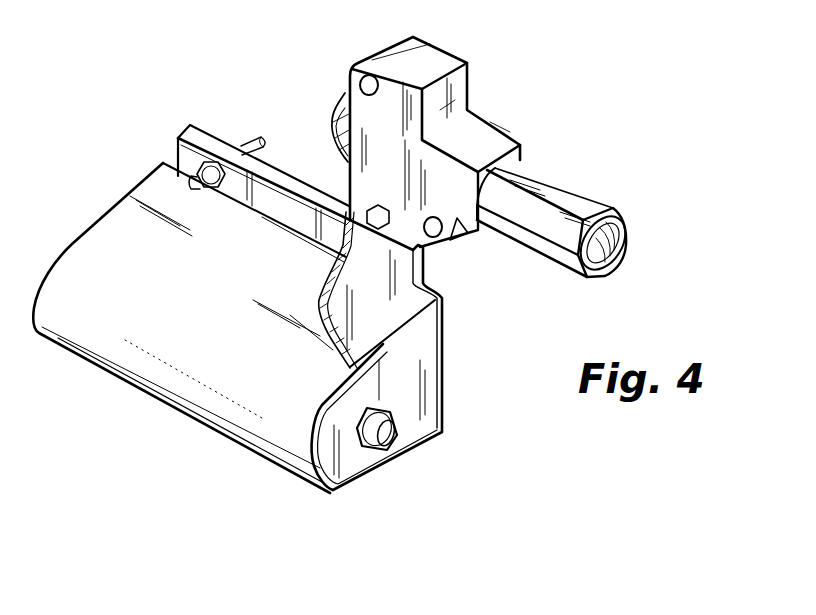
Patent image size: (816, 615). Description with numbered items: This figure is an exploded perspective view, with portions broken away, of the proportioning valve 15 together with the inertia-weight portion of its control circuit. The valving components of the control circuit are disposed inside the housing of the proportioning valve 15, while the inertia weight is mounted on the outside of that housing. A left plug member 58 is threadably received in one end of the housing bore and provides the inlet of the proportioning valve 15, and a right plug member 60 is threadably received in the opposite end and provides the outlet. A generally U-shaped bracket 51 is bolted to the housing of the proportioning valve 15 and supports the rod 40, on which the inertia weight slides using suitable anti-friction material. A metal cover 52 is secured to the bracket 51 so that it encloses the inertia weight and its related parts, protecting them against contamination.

The proportioning valve 15 is at (447, 62).
The rod 40 is at (394, 440).
The U-shaped bracket 51 is at (418, 383).
The metal cover 52 is at (244, 262).
The left plug member 58 is at (333, 117).
The right plug member 60 is at (577, 198).